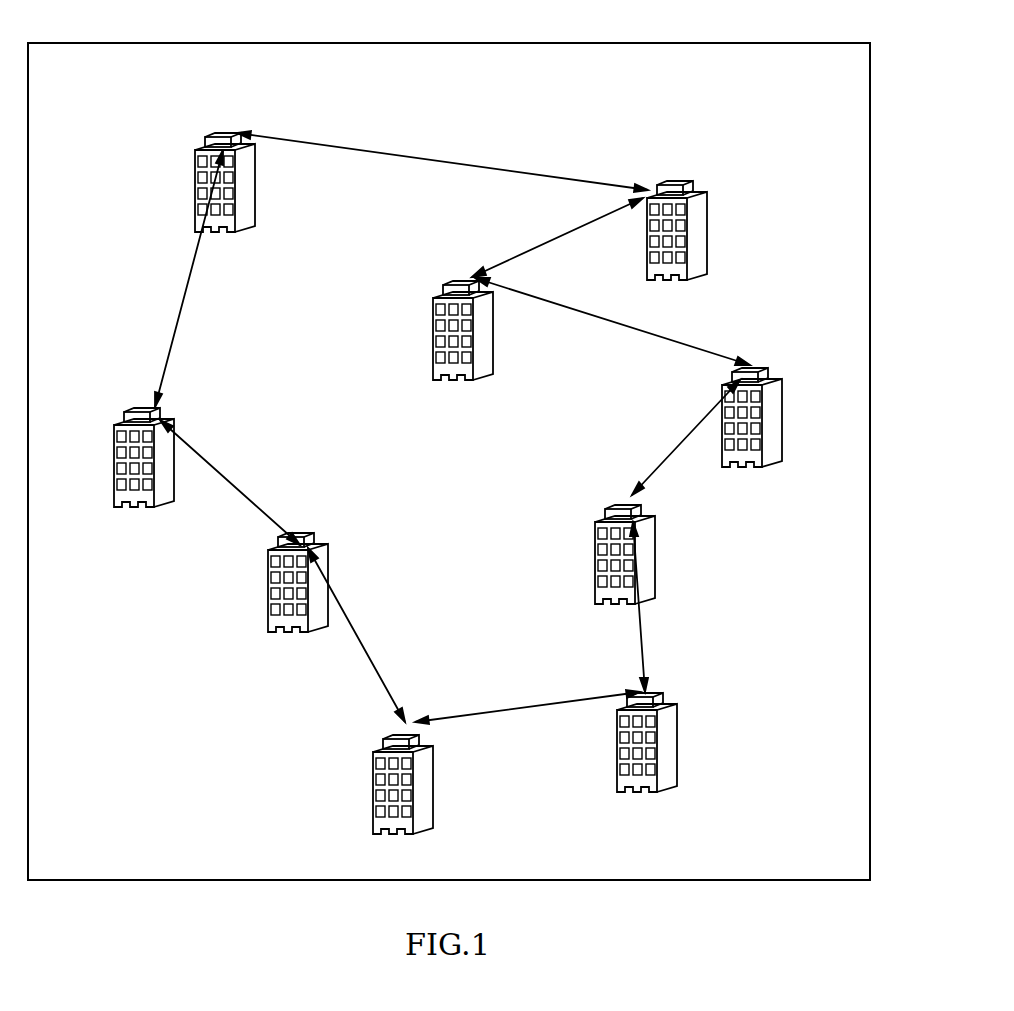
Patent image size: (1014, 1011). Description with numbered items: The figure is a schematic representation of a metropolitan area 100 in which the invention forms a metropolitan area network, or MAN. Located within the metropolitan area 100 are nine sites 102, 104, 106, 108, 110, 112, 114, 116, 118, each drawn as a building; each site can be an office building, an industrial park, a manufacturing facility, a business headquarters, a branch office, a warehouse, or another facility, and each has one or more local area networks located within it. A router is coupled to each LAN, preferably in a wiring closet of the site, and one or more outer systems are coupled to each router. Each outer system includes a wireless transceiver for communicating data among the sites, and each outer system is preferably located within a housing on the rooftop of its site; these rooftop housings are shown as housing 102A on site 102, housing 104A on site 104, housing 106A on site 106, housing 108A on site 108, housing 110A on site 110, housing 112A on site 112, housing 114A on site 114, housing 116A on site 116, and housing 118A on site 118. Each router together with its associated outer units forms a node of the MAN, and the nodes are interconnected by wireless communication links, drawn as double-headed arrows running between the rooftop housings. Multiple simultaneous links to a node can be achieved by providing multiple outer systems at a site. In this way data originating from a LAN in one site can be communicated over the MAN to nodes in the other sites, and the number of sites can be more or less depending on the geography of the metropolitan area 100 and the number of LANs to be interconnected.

The metropolitan area 100 is at (788, 43).
The site 102 is at (256, 188).
The housing 102A is at (232, 124).
The site 104 is at (708, 232).
The housing 104A is at (681, 175).
The site 106 is at (485, 338).
The housing 106A is at (473, 263).
The site 108 is at (783, 420).
The housing 108A is at (762, 356).
The site 110 is at (655, 560).
The housing 110A is at (614, 489).
The site 112 is at (680, 748).
The housing 112A is at (667, 682).
The site 114 is at (435, 790).
The housing 114A is at (420, 717).
The site 116 is at (265, 590).
The housing 116A is at (313, 519).
The site 118 is at (113, 463).
The housing 118A is at (172, 402).